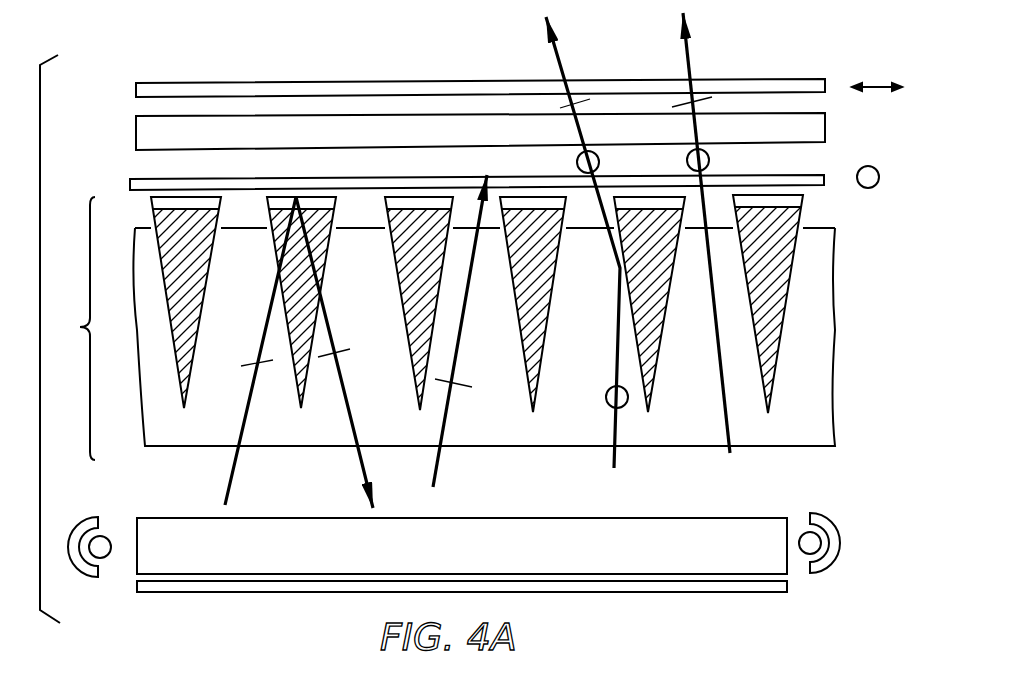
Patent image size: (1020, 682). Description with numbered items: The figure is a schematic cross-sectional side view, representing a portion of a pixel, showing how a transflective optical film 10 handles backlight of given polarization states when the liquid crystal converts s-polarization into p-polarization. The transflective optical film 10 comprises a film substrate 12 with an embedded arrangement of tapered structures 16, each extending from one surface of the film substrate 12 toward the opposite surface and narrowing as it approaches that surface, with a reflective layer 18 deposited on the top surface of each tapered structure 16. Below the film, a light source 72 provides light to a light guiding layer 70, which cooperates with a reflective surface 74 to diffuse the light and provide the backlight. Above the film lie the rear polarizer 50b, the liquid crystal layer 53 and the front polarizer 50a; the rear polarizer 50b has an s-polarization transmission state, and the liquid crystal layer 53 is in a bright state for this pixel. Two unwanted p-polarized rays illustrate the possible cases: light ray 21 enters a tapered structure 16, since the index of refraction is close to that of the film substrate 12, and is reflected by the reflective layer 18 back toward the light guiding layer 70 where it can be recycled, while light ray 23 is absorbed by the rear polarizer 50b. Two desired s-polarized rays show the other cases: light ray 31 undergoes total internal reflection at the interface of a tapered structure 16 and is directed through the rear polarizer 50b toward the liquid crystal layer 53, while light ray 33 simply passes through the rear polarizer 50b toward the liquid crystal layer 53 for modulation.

The transflective optical film 10 is at (68, 328).
The film substrate 12 is at (812, 428).
The tapered structure 16 is at (653, 315).
The reflective layer 18 is at (780, 197).
The light ray 21 is at (232, 468).
The light ray 23 is at (440, 470).
The light ray 31 is at (615, 427).
The light ray 33 is at (723, 427).
The front polarizer 50a is at (136, 90).
The rear polarizer 50b is at (130, 185).
The liquid crystal layer 53 is at (318, 125).
The light guiding layer 70 is at (653, 530).
The light source 72 is at (827, 528).
The reflective surface 74 is at (787, 585).